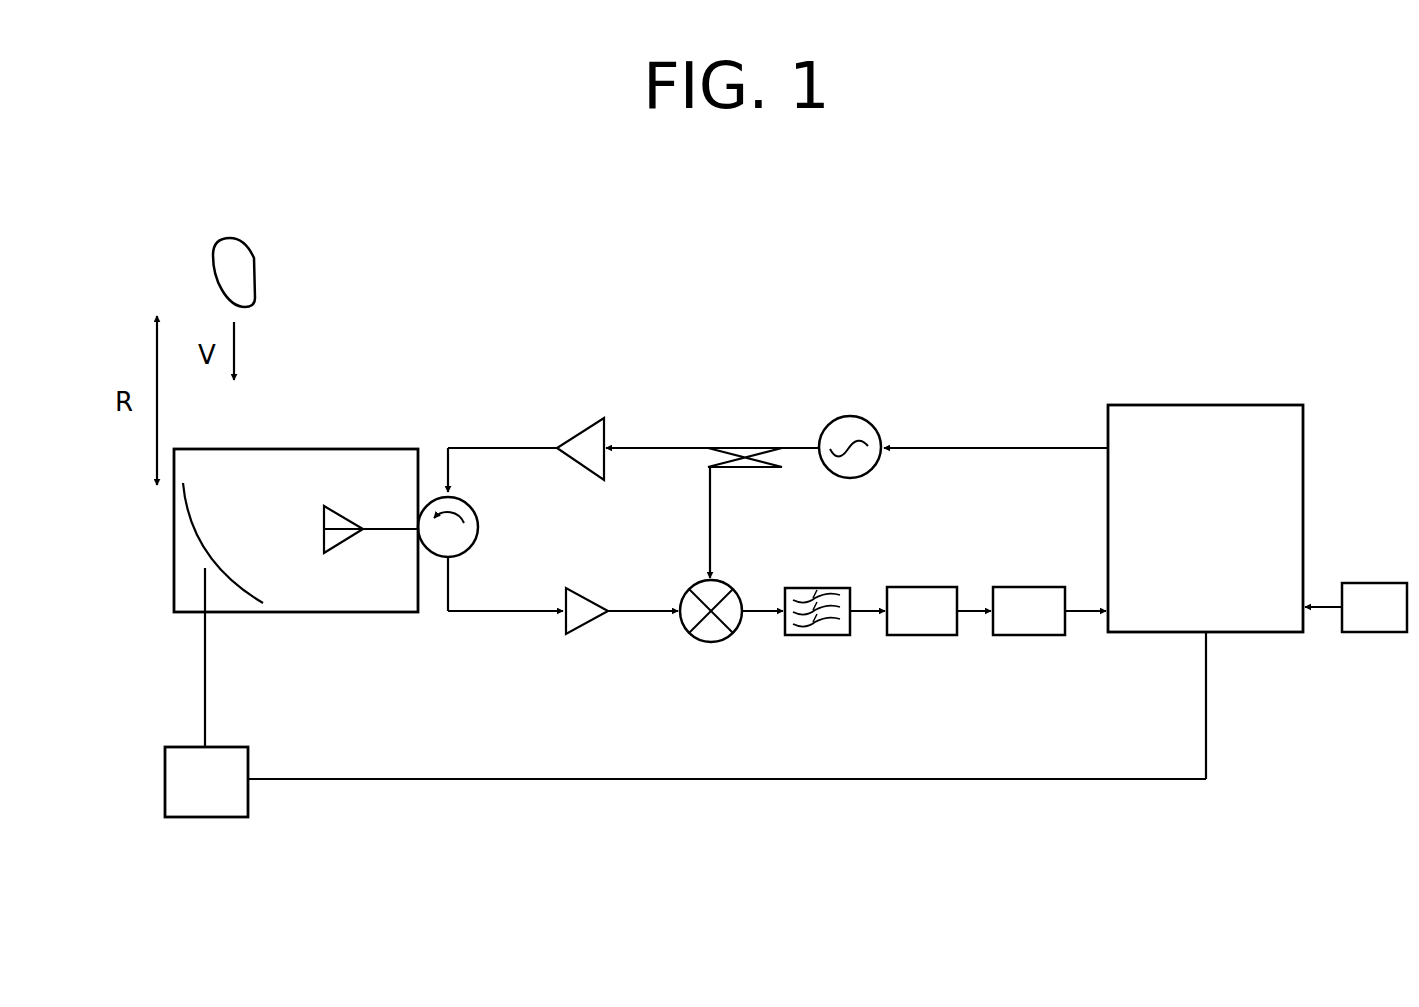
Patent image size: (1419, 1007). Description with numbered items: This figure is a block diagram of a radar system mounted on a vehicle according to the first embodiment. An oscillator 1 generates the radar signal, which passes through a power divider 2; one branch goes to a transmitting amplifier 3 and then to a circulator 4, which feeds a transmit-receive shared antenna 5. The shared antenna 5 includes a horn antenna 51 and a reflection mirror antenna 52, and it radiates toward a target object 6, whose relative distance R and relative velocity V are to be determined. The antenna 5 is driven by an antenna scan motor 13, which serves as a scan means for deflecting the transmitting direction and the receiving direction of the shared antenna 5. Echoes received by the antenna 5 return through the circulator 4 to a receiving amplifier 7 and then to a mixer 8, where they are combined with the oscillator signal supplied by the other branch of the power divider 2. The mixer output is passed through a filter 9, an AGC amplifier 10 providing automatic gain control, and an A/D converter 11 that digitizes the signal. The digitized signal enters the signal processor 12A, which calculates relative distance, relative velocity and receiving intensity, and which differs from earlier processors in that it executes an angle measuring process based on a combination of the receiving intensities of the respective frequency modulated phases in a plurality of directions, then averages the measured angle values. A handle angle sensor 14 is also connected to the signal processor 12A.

The oscillator 1 is at (848, 416).
The power divider 2 is at (742, 447).
The transmitting amplifier 3 is at (580, 430).
The circulator 4 is at (479, 523).
The transmit-receive shared antenna 5 is at (296, 495).
The horn antenna 51 is at (343, 512).
The reflection mirror antenna 52 is at (188, 513).
The target object 6 is at (255, 278).
The receiving amplifier 7 is at (585, 630).
The mixer 8 is at (712, 642).
The filter 9 is at (823, 635).
The AGC amplifier 10 is at (918, 635).
The A/D converter 11 is at (1025, 635).
The signal processor 12A is at (1233, 405).
The antenna scan motor 13 is at (230, 747).
The handle angle sensor 14 is at (1375, 583).